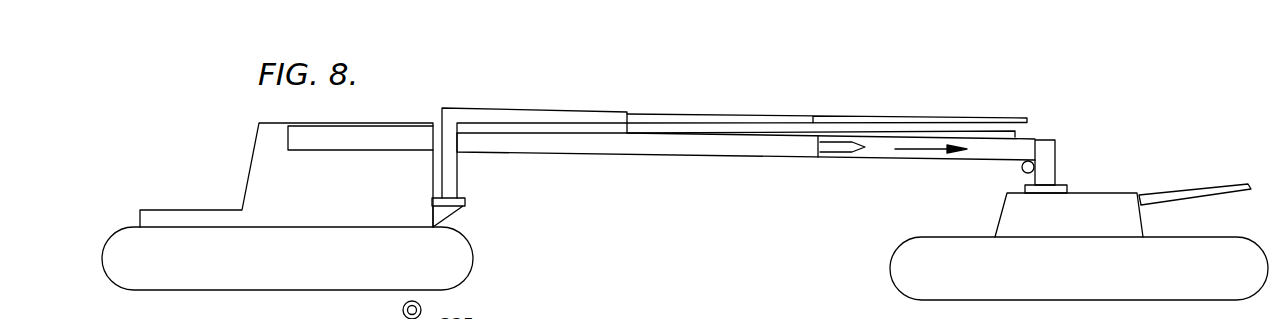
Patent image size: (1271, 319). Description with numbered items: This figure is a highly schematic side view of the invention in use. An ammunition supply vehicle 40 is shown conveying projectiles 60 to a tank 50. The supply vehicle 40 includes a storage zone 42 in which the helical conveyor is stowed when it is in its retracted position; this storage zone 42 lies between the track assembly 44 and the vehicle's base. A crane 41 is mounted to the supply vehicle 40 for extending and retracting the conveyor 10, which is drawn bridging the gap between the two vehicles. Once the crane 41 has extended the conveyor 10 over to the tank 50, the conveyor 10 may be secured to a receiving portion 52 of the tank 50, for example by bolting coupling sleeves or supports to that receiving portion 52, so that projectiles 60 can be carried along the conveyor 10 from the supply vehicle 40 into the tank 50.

The ammunition supply vehicle 40 is at (287, 190).
The storage zone 42 is at (312, 137).
The track assembly 44 is at (367, 122).
The crane 41 is at (695, 113).
The conveyor 10 is at (603, 160).
The projectiles 60 is at (840, 157).
The receiving portion 52 is at (1057, 158).
The tank 50 is at (1097, 271).